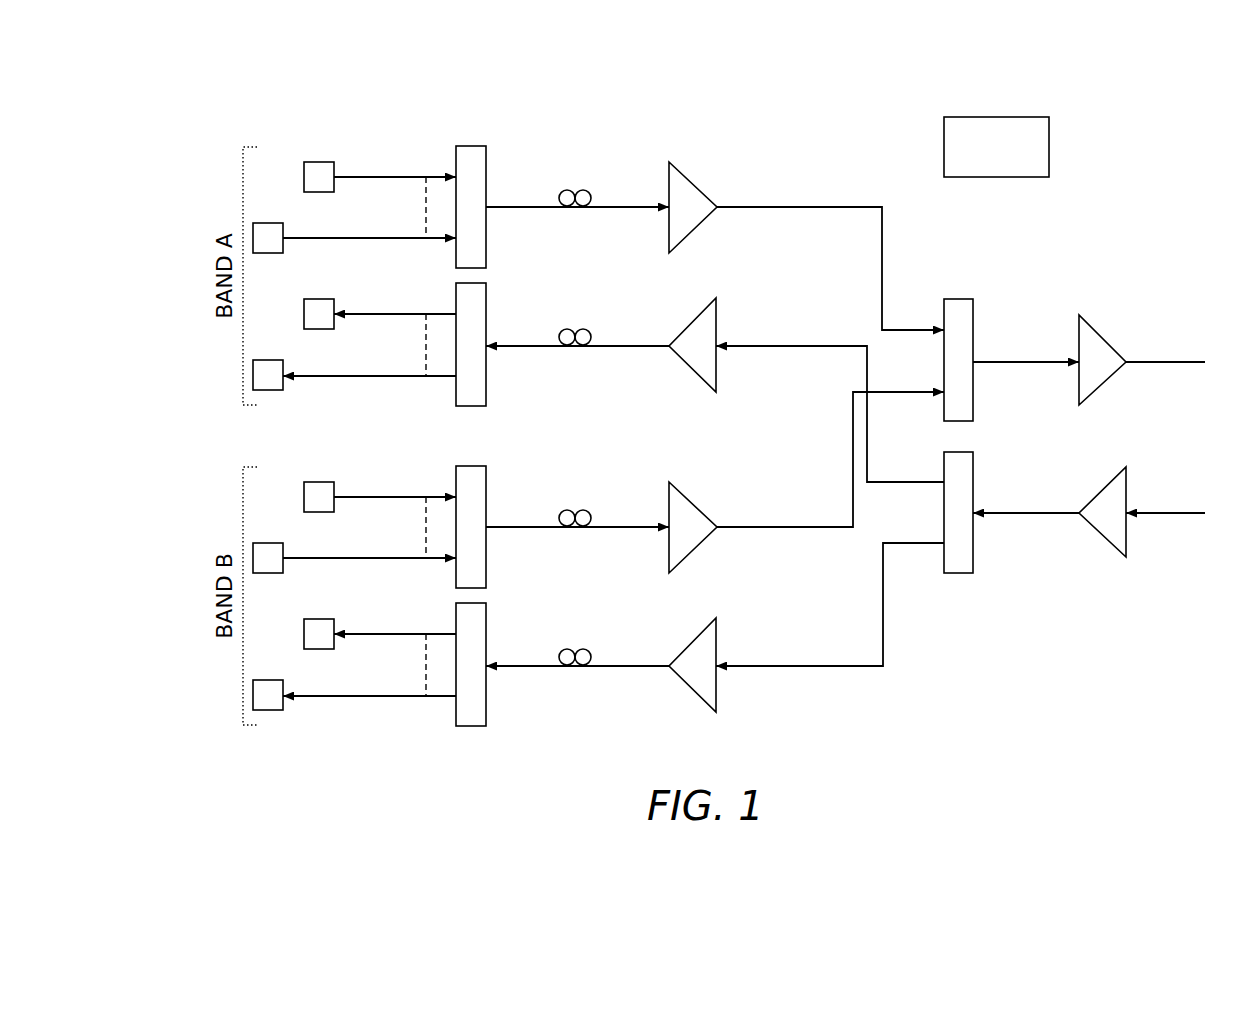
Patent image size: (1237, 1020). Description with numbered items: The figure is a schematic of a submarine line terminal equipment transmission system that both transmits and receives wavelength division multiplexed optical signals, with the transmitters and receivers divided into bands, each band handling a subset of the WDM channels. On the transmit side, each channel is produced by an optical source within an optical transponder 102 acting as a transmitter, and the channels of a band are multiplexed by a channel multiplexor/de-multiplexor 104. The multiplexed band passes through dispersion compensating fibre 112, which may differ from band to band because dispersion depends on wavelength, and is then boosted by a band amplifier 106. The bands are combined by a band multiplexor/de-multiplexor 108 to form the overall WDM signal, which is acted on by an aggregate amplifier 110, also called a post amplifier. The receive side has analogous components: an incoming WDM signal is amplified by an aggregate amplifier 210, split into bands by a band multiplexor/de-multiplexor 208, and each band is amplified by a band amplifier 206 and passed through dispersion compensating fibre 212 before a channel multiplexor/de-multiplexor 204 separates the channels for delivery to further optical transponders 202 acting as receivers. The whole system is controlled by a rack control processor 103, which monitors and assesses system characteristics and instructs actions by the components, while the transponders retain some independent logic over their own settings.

The optical transponder 102 is at (318, 162).
The further optical transponder 202 is at (318, 299).
The channel multiplexor/de-multiplexor 104 is at (486, 178).
The channel multiplexor/de-multiplexor 204 is at (486, 310).
The dispersion compensating fibre 112 is at (590, 190).
The dispersion compensating fibre 212 is at (590, 329).
The band amplifier 106 is at (698, 186).
The band amplifier 206 is at (716, 368).
The band multiplexor/de-multiplexor 108 is at (973, 316).
The band multiplexor/de-multiplexor 208 is at (973, 548).
The aggregate amplifier 110 is at (1100, 332).
The aggregate amplifier 210 is at (1126, 532).
The rack control processor 103 is at (1011, 157).